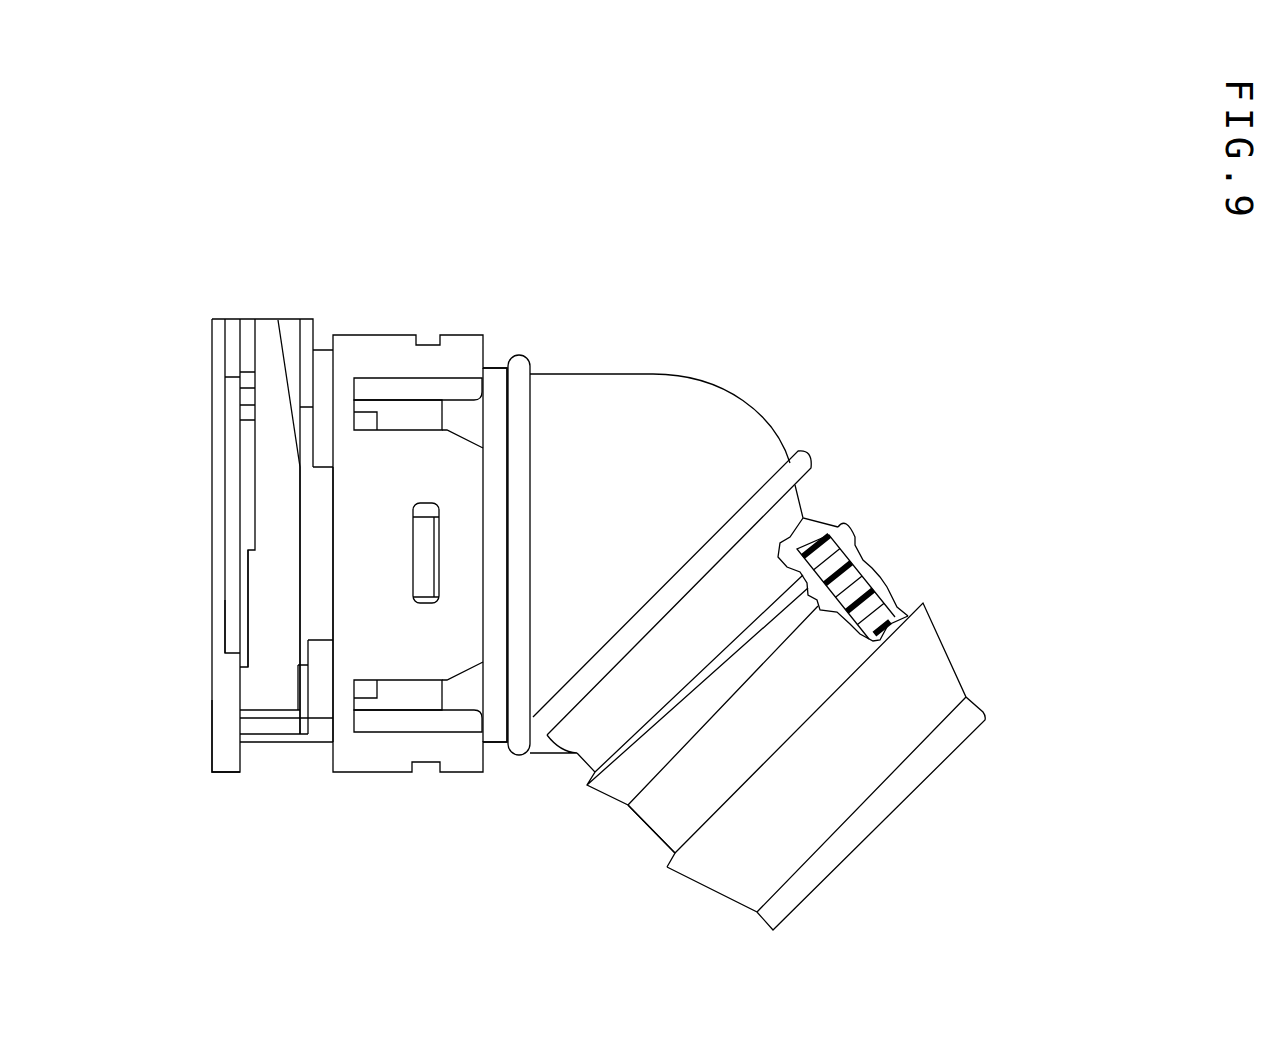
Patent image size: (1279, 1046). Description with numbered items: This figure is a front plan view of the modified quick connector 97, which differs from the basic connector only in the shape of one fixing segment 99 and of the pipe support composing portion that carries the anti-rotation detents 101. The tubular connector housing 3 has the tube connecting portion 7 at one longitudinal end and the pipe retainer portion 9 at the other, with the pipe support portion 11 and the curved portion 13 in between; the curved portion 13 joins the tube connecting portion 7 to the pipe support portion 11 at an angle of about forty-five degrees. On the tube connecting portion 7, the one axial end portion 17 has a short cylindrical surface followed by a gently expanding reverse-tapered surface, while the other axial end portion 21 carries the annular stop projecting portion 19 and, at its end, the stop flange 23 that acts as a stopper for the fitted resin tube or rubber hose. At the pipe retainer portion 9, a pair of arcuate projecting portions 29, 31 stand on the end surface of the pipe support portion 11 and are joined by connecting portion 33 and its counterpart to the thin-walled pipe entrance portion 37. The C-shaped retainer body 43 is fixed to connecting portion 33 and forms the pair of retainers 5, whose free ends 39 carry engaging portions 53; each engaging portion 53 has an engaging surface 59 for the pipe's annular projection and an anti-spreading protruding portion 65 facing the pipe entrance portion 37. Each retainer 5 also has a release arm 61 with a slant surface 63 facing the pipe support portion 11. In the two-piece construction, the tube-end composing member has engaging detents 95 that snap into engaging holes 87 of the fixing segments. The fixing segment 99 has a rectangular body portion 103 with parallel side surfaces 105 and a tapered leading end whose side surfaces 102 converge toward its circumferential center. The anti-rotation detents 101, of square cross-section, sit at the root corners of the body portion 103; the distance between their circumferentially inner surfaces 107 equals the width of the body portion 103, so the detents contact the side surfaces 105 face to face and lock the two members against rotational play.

The quick connector 97 is at (178, 229).
The pipe retainer portion 9 is at (267, 302).
The slant surface 63 is at (292, 340).
The connecting portion 33 is at (308, 347).
The arcuate projecting portion 29 is at (335, 380).
The release arm 61 is at (280, 423).
The engaging portion 53 is at (250, 608).
The anti-spreading protruding portion 65 is at (247, 683).
The free end 39 is at (262, 693).
The pipe entrance portion 37 is at (227, 715).
The retainer 5 is at (272, 535).
The arcuate projecting portion 31 is at (320, 713).
The pipe support portion 11 is at (418, 390).
The side surface 105 is at (400, 407).
The anti-rotation detent 101 is at (363, 417).
The circumferentially inner surface 107 is at (367, 417).
The side surface 102 is at (464, 435).
The body portion 103 is at (510, 748).
The fixing segment 99 is at (506, 356).
The engaging detent 95 is at (430, 540).
The engaging hole 87 is at (433, 540).
The retainer body 43 is at (310, 530).
The engaging surface 59 is at (330, 660).
The connector housing 3 is at (592, 332).
The curved portion 13 is at (687, 452).
The stop flange 23 is at (797, 462).
The annular stop projecting portion 19 is at (758, 637).
The tube connecting portion 7 is at (864, 526).
The one axial end portion 17 is at (918, 687).
The other axial end portion 21 is at (680, 790).